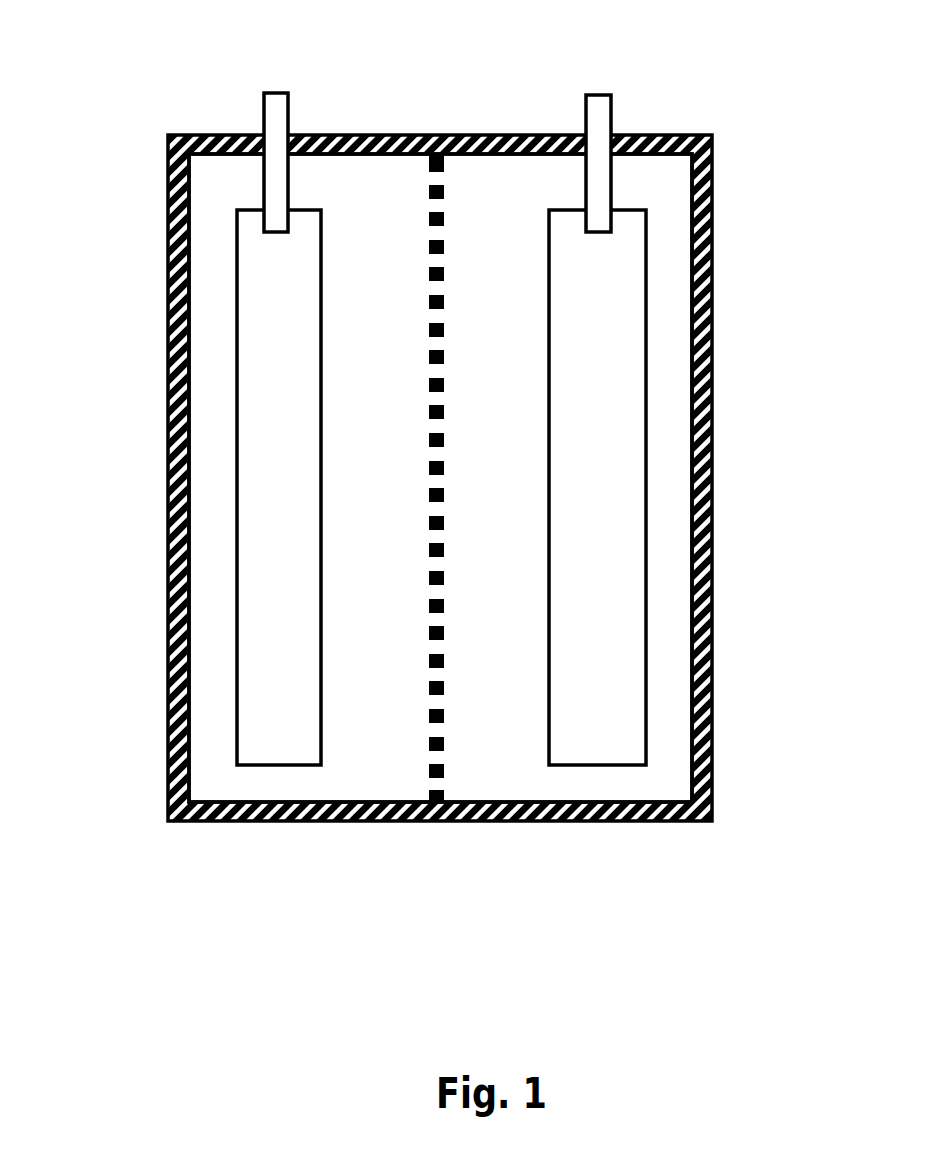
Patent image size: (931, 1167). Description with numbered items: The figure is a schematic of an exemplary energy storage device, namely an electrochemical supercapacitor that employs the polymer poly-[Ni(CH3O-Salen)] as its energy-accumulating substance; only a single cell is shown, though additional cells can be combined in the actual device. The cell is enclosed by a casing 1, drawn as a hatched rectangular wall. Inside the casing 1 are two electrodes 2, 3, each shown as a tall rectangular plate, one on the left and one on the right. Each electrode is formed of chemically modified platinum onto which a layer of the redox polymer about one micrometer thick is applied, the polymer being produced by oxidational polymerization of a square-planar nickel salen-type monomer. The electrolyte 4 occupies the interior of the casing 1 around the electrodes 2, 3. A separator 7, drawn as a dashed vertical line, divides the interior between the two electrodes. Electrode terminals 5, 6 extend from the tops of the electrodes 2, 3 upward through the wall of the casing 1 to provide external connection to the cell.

The casing 1 is at (168, 470).
The electrode 2 is at (263, 368).
The electrode 3 is at (628, 380).
The electrolyte 4 is at (492, 753).
The electrode terminal 5 is at (263, 103).
The electrode terminal 6 is at (612, 118).
The separator 7 is at (432, 668).